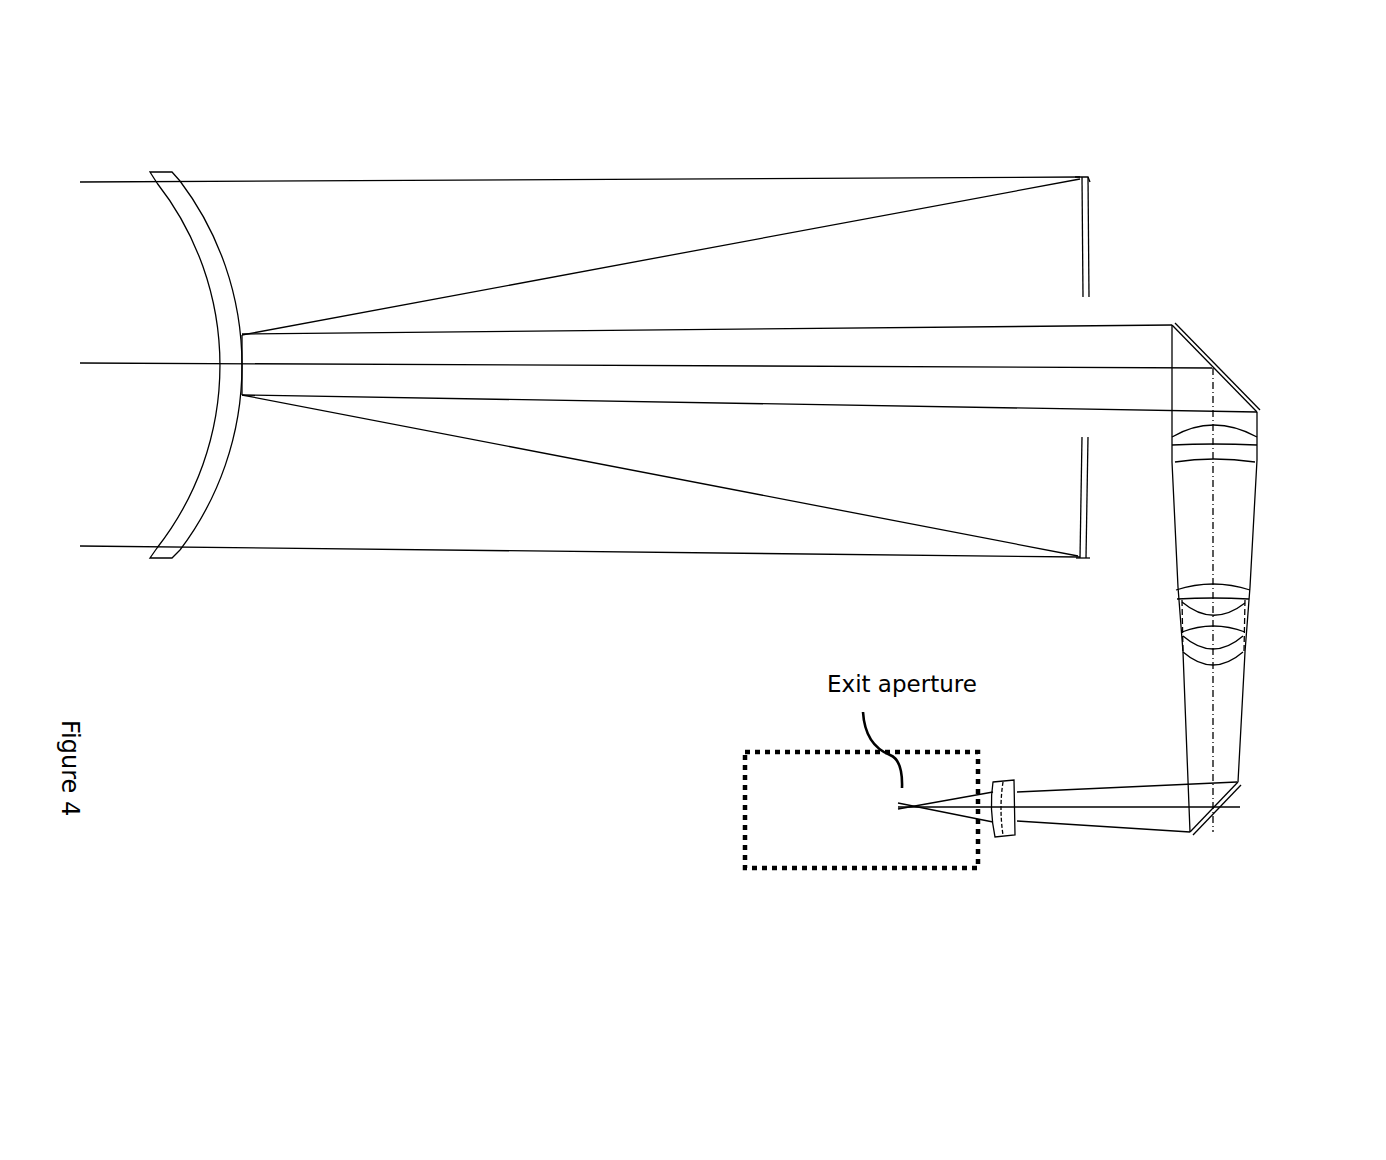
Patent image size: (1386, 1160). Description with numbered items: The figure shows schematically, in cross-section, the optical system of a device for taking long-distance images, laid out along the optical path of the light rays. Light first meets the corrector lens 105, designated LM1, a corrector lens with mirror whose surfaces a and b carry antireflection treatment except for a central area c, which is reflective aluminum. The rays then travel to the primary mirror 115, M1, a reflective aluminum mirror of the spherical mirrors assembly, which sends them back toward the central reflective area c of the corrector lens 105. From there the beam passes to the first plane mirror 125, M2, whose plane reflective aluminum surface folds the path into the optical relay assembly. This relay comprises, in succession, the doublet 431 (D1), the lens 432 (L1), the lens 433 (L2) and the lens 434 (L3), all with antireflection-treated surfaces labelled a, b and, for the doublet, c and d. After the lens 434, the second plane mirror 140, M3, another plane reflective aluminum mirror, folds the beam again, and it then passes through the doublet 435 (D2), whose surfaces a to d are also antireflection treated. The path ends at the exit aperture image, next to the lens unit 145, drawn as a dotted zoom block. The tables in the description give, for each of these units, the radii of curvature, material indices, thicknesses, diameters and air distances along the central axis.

The corrector lens 105 is at (222, 285).
The primary mirror 115 is at (1082, 210).
The first plane mirror 125 is at (1218, 370).
The doublet 431 is at (1260, 456).
The lens 432 is at (1252, 597).
The lens 433 is at (1245, 622).
The lens 434 is at (1245, 650).
The doublet 435 is at (1003, 782).
The second plane mirror 140 is at (1233, 785).
The lens unit 145 is at (762, 762).